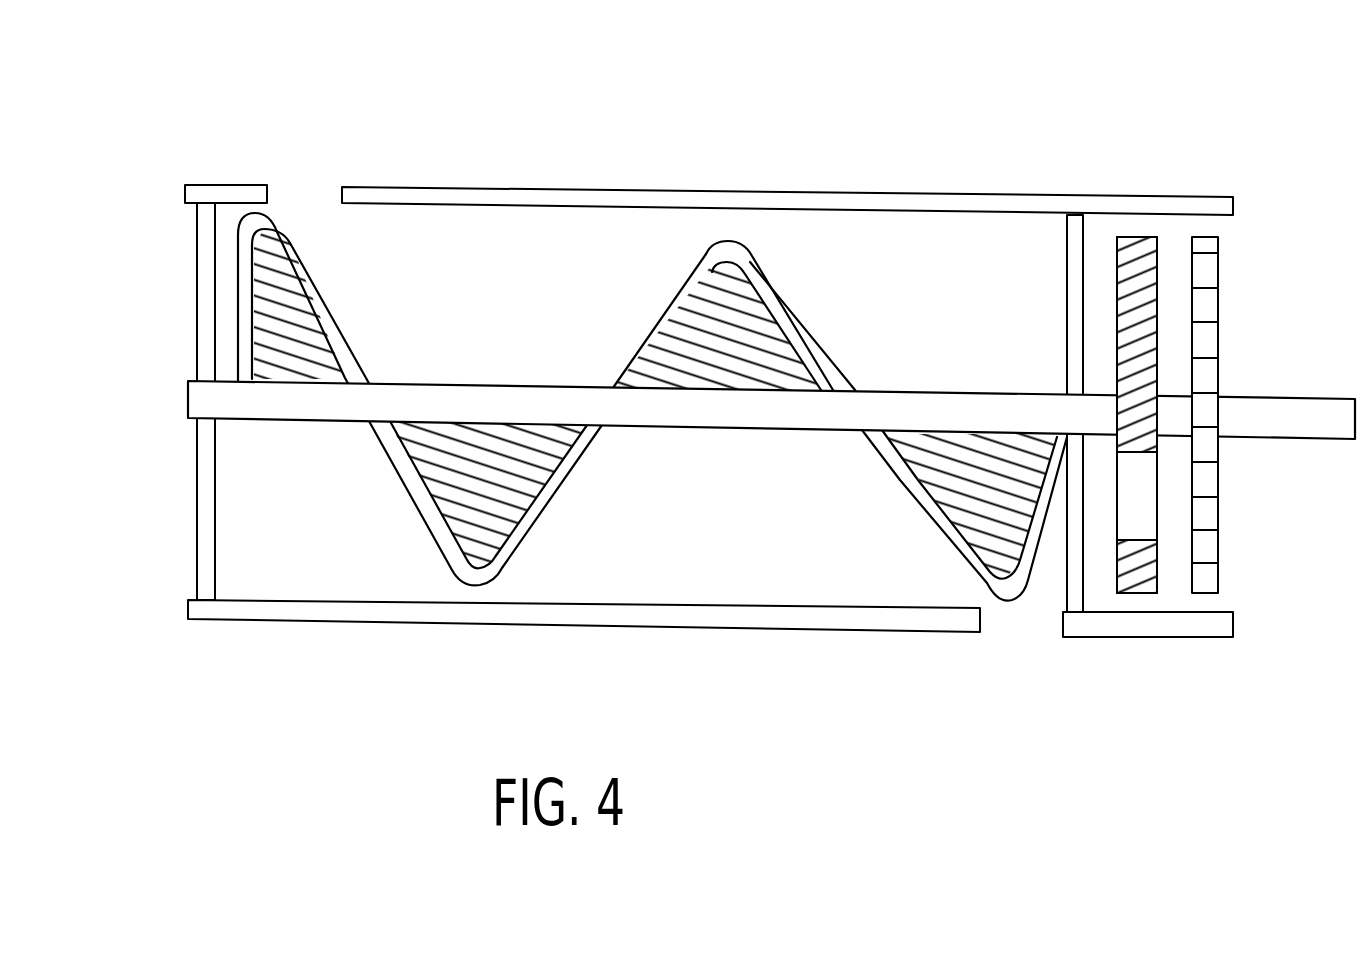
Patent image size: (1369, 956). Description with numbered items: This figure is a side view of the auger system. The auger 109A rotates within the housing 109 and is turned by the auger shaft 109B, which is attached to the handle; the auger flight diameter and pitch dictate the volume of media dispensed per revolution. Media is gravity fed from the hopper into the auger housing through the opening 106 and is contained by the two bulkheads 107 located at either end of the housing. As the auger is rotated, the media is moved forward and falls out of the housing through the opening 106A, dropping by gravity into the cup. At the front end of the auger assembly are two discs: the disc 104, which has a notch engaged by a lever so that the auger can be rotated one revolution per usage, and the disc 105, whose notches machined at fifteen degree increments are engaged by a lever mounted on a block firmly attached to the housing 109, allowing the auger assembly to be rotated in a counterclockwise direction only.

The disc 104 is at (1133, 238).
The disc 105 is at (1209, 238).
The opening 106 is at (297, 192).
The opening 106A is at (997, 630).
The bulkhead 107 is at (194, 293).
The housing 109 is at (423, 183).
The auger 109A is at (457, 585).
The auger shaft 109B is at (184, 400).